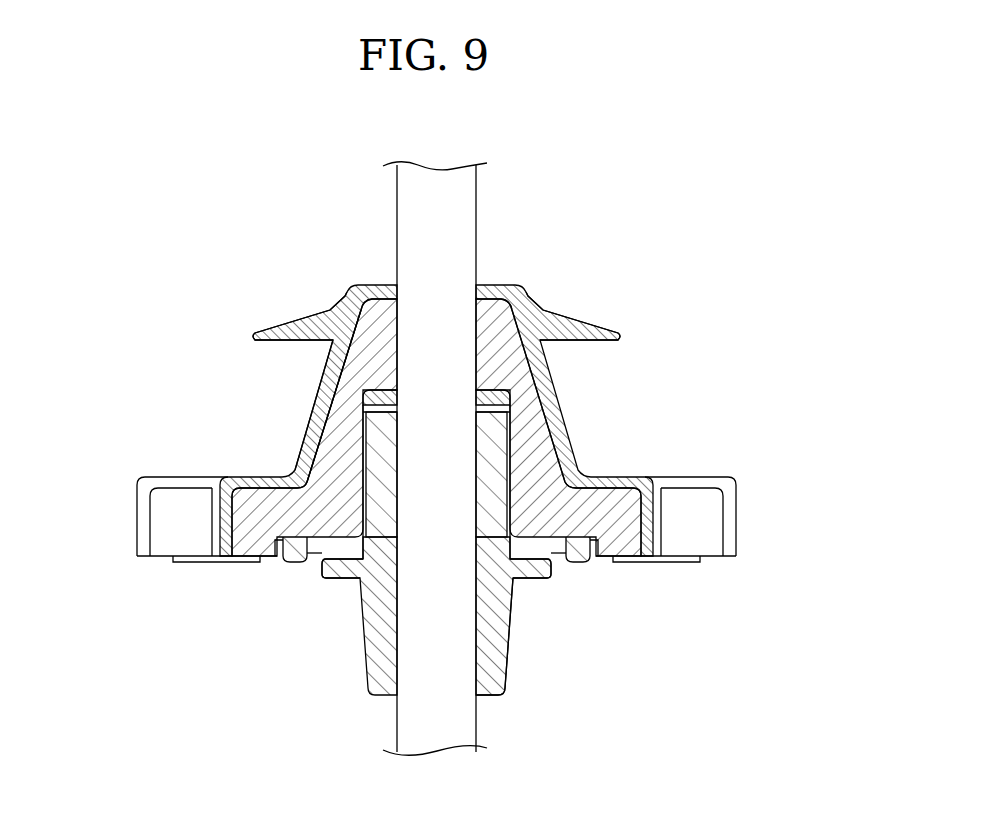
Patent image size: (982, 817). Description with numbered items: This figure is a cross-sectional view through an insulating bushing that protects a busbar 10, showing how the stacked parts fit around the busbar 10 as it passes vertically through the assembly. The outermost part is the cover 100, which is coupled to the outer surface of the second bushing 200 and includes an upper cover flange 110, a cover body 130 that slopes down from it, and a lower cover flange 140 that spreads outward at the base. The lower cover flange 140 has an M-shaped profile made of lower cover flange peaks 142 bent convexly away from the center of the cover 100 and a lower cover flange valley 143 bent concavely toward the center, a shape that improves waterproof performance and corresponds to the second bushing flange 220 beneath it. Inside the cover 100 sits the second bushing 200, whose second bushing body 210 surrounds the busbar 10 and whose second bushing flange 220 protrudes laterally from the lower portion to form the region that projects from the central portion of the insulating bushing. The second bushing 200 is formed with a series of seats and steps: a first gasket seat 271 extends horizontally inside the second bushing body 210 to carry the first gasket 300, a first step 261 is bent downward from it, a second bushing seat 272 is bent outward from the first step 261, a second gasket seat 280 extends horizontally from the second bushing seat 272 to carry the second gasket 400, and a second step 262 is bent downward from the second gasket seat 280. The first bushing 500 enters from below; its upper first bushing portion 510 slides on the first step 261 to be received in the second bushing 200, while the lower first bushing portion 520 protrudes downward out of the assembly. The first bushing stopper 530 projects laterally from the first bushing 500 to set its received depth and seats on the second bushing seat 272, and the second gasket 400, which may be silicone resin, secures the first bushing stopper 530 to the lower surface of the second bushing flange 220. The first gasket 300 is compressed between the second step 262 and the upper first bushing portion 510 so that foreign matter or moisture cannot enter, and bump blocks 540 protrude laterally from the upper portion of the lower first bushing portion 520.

The busbar 10 is at (462, 188).
The cover 100 is at (140, 332).
The upper cover flange 110 is at (250, 339).
The cover body 130 is at (327, 378).
The lower cover flange 140 is at (176, 477).
The lower cover flange peak 142 is at (133, 513).
The lower cover flange valley 143 is at (217, 530).
The second bushing 200 is at (380, 288).
The second bushing body 210 is at (547, 440).
The second bushing flange 220 is at (620, 510).
The first step 261 is at (350, 423).
The second step 262 is at (250, 562).
The first gasket seat 271 is at (555, 320).
The second bushing seat 272 is at (312, 510).
The second gasket seat 280 is at (310, 540).
The first gasket 300 is at (513, 395).
The second gasket 400 is at (583, 565).
The first bushing 500 is at (600, 655).
The upper first bushing portion 510 is at (485, 610).
The lower first bushing portion 520 is at (500, 690).
The first bushing stopper 530 is at (538, 560).
The bump block 540 is at (343, 570).